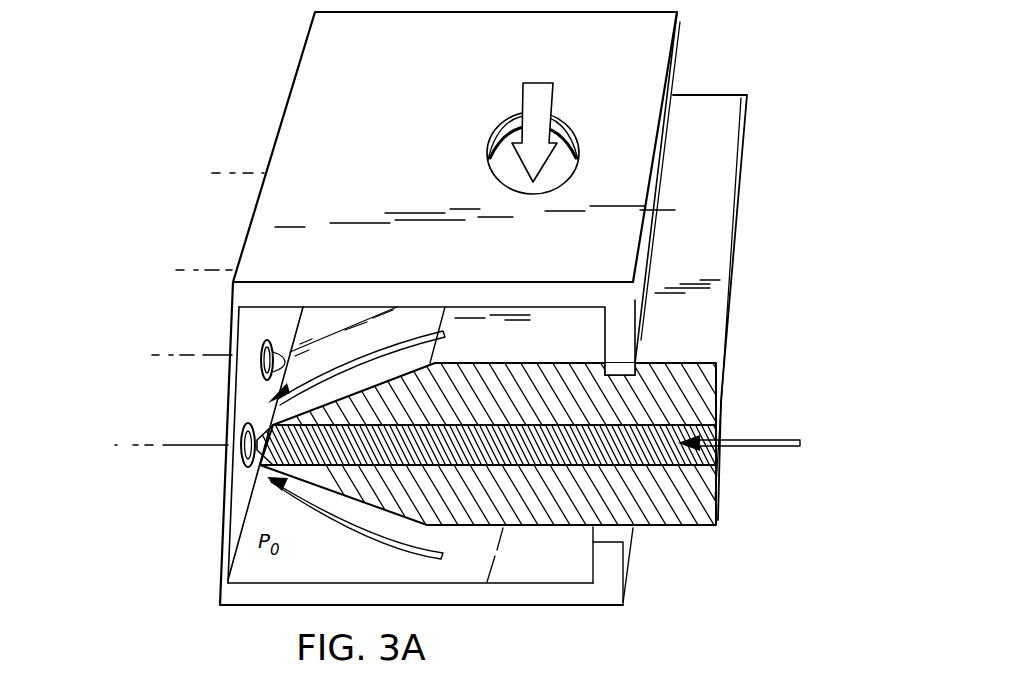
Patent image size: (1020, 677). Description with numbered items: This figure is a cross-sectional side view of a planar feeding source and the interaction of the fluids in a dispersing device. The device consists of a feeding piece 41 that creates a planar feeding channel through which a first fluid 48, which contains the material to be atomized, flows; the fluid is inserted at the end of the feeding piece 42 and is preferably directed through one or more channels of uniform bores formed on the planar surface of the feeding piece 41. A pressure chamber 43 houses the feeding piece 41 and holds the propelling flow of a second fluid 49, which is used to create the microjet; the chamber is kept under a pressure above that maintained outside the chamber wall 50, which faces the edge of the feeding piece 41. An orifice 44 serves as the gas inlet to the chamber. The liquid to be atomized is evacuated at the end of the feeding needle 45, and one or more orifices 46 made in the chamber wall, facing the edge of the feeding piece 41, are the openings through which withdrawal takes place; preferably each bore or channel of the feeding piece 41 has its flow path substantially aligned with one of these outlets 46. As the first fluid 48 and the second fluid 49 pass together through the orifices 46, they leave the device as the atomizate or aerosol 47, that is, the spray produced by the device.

The feeding piece 41 is at (727, 363).
The end of the feeding piece 42 is at (710, 425).
The pressure chamber 43 is at (345, 572).
The orifice used as gas inlet 44 is at (580, 147).
The end of the feeding needle 45 is at (259, 466).
The orifices through which withdrawal takes place 46 is at (243, 432).
The atomizate or aerosol 47 is at (116, 419).
The first fluid 48 is at (792, 427).
The second fluid 49 is at (526, 97).
The wall of the propulsion chamber 50 is at (220, 517).